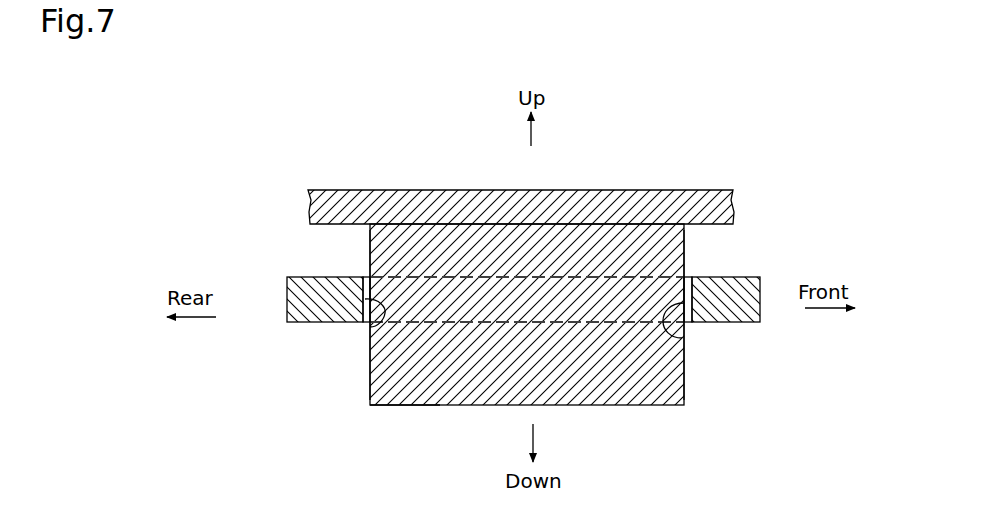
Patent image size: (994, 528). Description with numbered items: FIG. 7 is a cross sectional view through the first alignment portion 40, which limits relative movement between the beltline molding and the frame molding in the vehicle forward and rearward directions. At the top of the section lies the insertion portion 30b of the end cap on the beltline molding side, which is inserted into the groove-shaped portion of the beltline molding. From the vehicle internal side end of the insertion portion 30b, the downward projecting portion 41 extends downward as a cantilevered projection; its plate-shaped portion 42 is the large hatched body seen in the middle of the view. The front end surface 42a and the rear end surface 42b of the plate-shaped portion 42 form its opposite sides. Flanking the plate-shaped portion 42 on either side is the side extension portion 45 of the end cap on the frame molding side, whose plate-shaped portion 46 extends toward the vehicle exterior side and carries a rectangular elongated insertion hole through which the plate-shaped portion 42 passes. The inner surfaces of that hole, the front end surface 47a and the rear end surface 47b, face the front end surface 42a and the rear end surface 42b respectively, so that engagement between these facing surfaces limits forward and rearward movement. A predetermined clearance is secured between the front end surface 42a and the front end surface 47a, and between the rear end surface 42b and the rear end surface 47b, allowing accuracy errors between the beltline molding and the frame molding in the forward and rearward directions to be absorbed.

The insertion portion 30b is at (660, 199).
The first alignment portion 40 is at (724, 245).
The downward projecting portion 41 is at (377, 410).
The plate-shaped portion 42 is at (591, 357).
The front end surface 42a is at (686, 367).
The rear end surface 42b is at (369, 382).
The side extension portion 45 is at (295, 274).
The plate-shaped portion 46 is at (743, 283).
The front end surface 47a is at (682, 338).
The rear end surface 47b is at (370, 327).